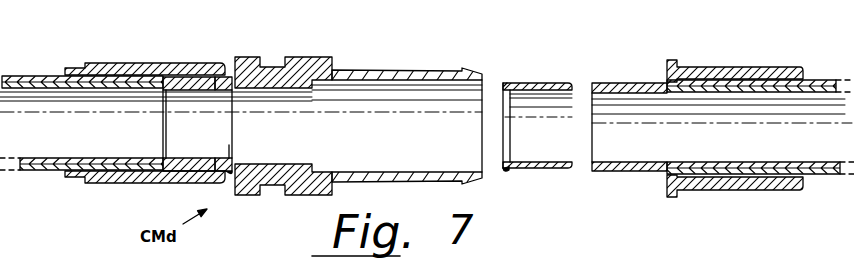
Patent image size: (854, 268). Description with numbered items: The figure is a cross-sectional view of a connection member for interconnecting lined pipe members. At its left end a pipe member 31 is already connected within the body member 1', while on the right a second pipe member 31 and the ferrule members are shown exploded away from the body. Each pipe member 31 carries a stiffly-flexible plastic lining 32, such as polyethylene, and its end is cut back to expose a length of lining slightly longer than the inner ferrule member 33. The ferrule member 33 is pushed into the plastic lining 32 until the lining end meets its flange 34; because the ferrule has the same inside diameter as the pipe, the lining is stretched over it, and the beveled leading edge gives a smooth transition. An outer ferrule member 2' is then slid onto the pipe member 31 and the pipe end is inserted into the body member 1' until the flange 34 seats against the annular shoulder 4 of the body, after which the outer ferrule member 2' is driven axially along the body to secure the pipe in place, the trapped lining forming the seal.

The pipe member 31 is at (22, 76).
The ferrule member 2' is at (434, 113).
The plastic lining 32 is at (184, 78).
The ferrule member 33 is at (222, 78).
The flange 34 is at (232, 174).
The coupling body (nipple) 4 is at (300, 57).
The body member 1' is at (376, 34).